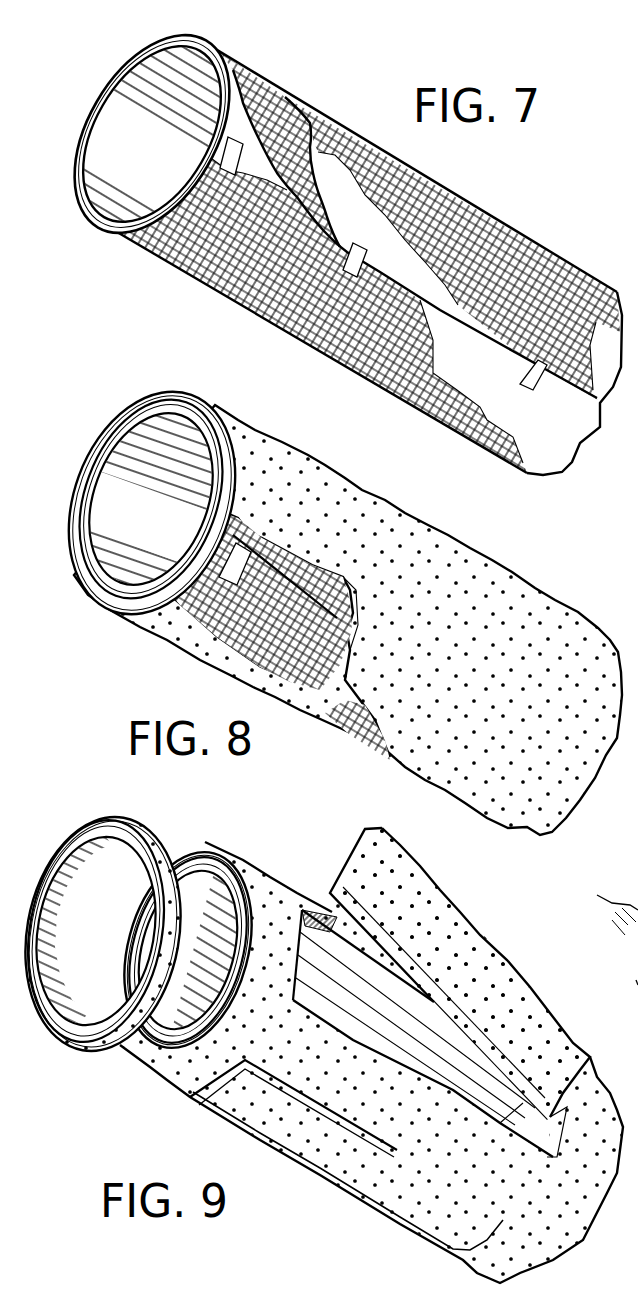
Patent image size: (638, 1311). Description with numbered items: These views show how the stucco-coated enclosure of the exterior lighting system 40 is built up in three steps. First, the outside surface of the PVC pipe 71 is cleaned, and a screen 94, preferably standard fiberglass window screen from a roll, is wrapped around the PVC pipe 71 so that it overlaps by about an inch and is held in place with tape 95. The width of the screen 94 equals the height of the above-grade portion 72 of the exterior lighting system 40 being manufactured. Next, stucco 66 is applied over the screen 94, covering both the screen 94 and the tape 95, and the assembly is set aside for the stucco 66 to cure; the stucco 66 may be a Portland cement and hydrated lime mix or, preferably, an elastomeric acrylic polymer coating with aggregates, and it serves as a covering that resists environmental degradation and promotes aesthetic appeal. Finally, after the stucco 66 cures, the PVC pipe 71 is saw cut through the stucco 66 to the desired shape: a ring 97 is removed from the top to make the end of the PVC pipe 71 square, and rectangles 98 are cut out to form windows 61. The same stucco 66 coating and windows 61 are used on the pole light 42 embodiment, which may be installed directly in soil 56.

In FIG. 7, the exterior lighting system 40 is at (495, 188).
In FIG. 9, the exterior lighting system 40 is at (260, 838).
In FIG. 7, the pole light 42 is at (582, 392).
In FIG. 9, the soil 56 is at (637, 992).
In FIG. 9, the window 61 is at (320, 985).
In FIG. 8, the stucco 66 is at (428, 545).
In FIG. 9, the stucco 66 is at (178, 1082).
In FIG. 7, the PVC pipe 71 is at (113, 77).
In FIG. 8, the PVC pipe 71 is at (97, 588).
In FIG. 9, the PVC pipe 71 is at (47, 1040).
In FIG. 9, the above-grade portion 72 is at (631, 896).
In FIG. 7, the screen 94 is at (237, 57).
In FIG. 8, the screen 94 is at (362, 740).
In FIG. 8, the tape 95 is at (232, 558).
In FIG. 9, the ring 97 is at (62, 822).
In FIG. 9, the rectangle 98 is at (362, 842).